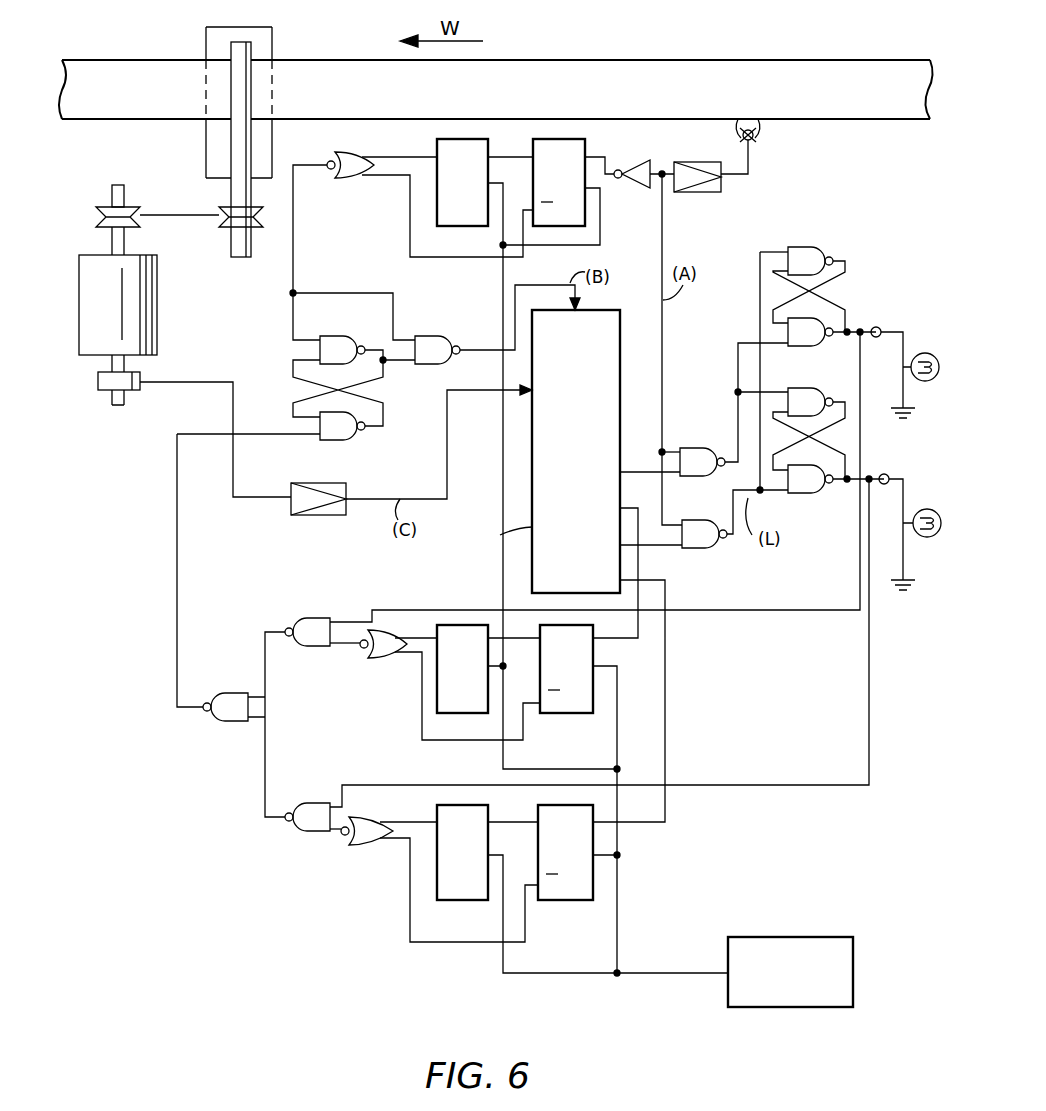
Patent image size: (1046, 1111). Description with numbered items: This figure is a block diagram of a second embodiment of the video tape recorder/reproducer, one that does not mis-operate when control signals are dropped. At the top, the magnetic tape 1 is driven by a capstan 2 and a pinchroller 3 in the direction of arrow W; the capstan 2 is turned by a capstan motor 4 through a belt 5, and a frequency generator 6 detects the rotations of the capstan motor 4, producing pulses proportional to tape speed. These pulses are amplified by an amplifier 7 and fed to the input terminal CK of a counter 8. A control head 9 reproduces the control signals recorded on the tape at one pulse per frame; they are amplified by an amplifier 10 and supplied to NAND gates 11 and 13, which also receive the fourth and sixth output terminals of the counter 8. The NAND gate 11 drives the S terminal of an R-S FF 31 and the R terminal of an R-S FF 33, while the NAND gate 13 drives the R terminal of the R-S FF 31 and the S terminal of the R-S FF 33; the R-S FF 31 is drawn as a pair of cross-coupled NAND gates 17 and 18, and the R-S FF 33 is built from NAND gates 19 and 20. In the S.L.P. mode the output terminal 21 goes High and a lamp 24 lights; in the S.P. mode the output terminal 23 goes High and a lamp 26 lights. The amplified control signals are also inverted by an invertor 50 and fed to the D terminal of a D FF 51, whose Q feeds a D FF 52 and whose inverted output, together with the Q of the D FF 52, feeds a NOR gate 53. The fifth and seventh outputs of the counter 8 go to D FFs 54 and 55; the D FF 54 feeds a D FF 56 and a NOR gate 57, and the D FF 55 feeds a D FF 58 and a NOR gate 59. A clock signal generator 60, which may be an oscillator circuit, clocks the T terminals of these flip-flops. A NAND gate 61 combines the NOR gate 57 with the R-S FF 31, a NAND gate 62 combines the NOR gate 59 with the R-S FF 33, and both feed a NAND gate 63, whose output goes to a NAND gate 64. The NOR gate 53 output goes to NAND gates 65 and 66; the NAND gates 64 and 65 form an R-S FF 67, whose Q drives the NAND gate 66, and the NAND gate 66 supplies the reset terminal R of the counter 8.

The magnetic tape 1 is at (705, 78).
The capstan 2 is at (252, 150).
The pinchroller 3 is at (262, 43).
The capstan motor 4 is at (157, 312).
The belt 5 is at (180, 212).
The frequency generator 6 is at (100, 382).
The amplifier 7 is at (300, 515).
The counter 8 is at (532, 452).
The control head 9 is at (760, 140).
The amplifier 10 is at (698, 192).
The NAND gate 11 is at (700, 448).
The NAND gate 13 is at (700, 548).
The NAND gate 17 is at (805, 247).
The NAND gate 18 is at (810, 318).
The NAND gate 19 is at (808, 388).
The NAND gate 20 is at (808, 493).
The output terminal 21 is at (880, 329).
The output terminal 23 is at (886, 485).
The lamp 24 is at (936, 358).
The lamp 26 is at (952, 486).
The R-S FF 31 is at (866, 258).
The R-S FF 33 is at (866, 405).
The invertor 50 is at (654, 165).
The D FF 51 is at (585, 218).
The D FF 52 is at (470, 143).
The NOR gate 53 is at (355, 178).
The D FF 54 is at (580, 630).
The D FF 55 is at (593, 812).
The D FF 56 is at (460, 625).
The NOR gate 57 is at (395, 630).
The D FF 58 is at (480, 805).
The NOR gate 59 is at (385, 817).
The clock signal generator 60 is at (795, 937).
The NAND gate 61 is at (318, 618).
The NAND gate 62 is at (305, 803).
The NAND gate 63 is at (240, 722).
The NAND gate 64 is at (348, 440).
The NAND gate 65 is at (333, 336).
The NAND gate 66 is at (435, 336).
The R-S FF 67 is at (396, 365).